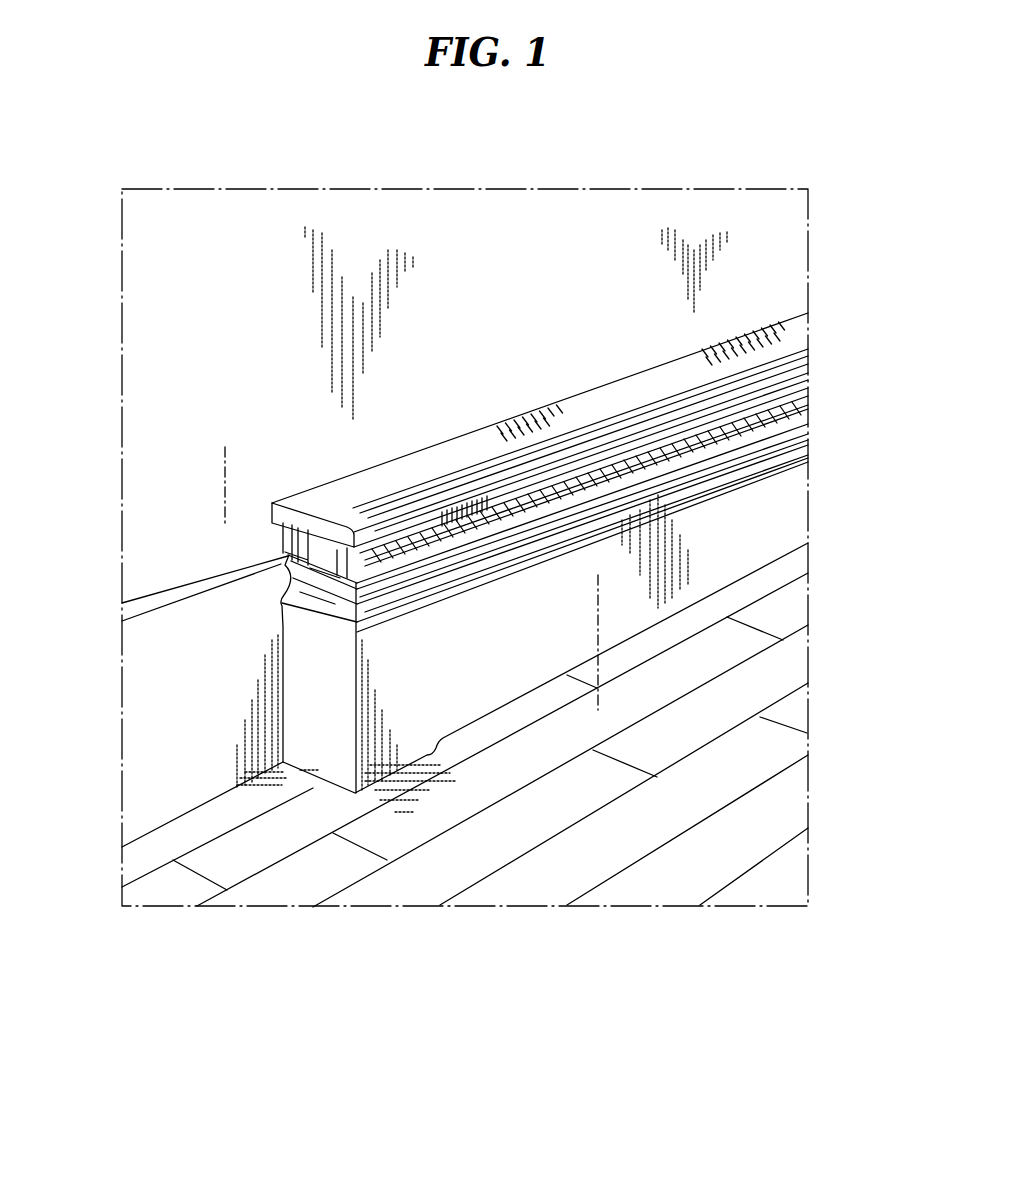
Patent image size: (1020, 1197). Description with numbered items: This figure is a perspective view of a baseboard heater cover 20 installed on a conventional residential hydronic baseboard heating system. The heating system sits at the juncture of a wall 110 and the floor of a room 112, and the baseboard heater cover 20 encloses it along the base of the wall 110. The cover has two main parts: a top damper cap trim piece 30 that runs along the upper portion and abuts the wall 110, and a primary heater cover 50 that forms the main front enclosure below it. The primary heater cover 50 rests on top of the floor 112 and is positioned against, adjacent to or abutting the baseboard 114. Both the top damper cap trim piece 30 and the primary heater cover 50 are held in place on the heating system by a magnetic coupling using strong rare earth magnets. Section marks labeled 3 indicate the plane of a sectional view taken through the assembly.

The baseboard heater cover 20 is at (597, 385).
The top damper cap trim piece 30 is at (805, 327).
The primary heater cover 50 is at (795, 505).
The wall 110 is at (730, 225).
The floor of a room 112 is at (293, 890).
The baseboard 114 is at (150, 716).
The section line 3- 3 is at (277, 480).